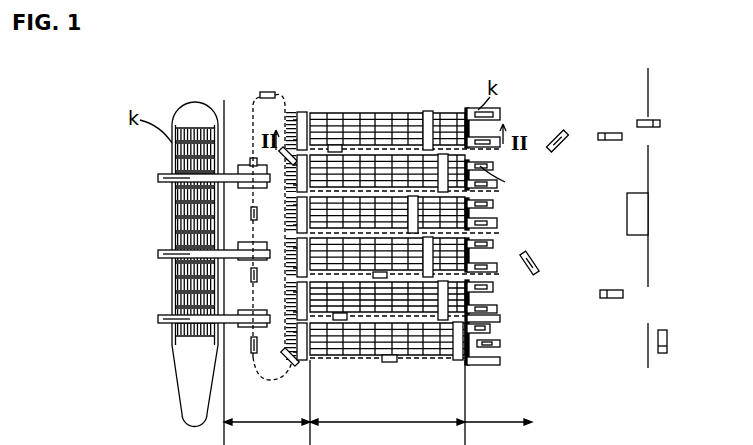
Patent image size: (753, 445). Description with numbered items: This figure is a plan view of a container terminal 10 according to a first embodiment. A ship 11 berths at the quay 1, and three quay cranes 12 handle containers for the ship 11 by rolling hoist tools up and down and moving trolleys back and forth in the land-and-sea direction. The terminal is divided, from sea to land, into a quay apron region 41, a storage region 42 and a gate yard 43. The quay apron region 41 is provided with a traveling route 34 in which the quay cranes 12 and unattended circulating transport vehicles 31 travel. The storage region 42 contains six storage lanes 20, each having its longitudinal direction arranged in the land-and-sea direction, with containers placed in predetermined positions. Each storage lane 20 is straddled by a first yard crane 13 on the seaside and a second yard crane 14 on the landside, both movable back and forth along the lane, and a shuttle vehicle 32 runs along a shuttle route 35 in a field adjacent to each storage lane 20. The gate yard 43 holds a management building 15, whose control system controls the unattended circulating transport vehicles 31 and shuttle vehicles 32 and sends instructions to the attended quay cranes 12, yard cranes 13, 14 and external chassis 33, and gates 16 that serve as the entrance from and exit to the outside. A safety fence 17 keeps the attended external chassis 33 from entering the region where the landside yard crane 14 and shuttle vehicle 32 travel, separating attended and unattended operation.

The quay 1 is at (251, 82).
The container terminal 10 is at (597, 114).
The ship 11 is at (190, 103).
The quay crane 12 is at (165, 178).
The first yard crane 13 is at (306, 115).
The second yard crane 14 is at (430, 112).
The management building 15 is at (638, 212).
The gate 16 is at (650, 118).
The safety fence 17 is at (500, 110).
The storage lane 20 is at (368, 113).
The circulating transport vehicle 31 is at (250, 215).
The shuttle vehicle 32 is at (335, 145).
The external chassis 33 is at (560, 130).
The traveling route 34 is at (277, 92).
The shuttle route 35 is at (506, 182).
The quay apron region 41 is at (267, 432).
The storage region 42 is at (387, 432).
The gate yard 43 is at (498, 432).